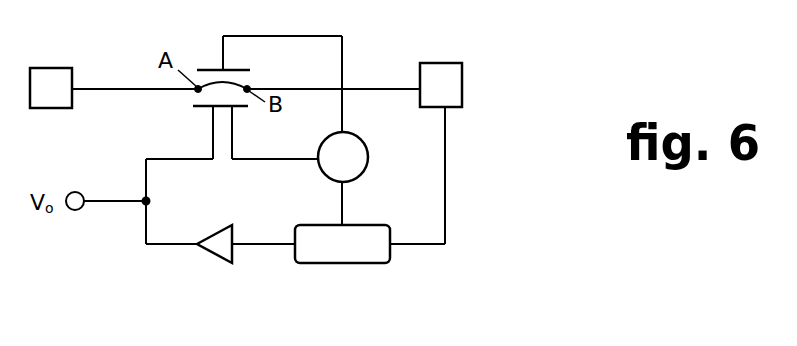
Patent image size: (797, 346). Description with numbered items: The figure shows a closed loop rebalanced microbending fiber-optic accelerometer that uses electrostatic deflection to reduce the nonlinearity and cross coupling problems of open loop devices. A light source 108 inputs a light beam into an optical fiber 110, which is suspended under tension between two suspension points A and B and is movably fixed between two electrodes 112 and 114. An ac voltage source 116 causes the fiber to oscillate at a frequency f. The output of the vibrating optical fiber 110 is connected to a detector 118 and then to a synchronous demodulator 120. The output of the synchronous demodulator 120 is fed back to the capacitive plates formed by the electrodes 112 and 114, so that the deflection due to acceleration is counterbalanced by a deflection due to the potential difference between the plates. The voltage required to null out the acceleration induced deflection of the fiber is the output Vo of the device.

The light source 108 is at (60, 68).
The optical fiber 110 is at (128, 96).
The electrode 112 is at (237, 107).
The electrode 114 is at (235, 70).
The ac voltage source 116 is at (360, 168).
The detector 118 is at (462, 83).
The synchronous demodulator 120 is at (372, 262).